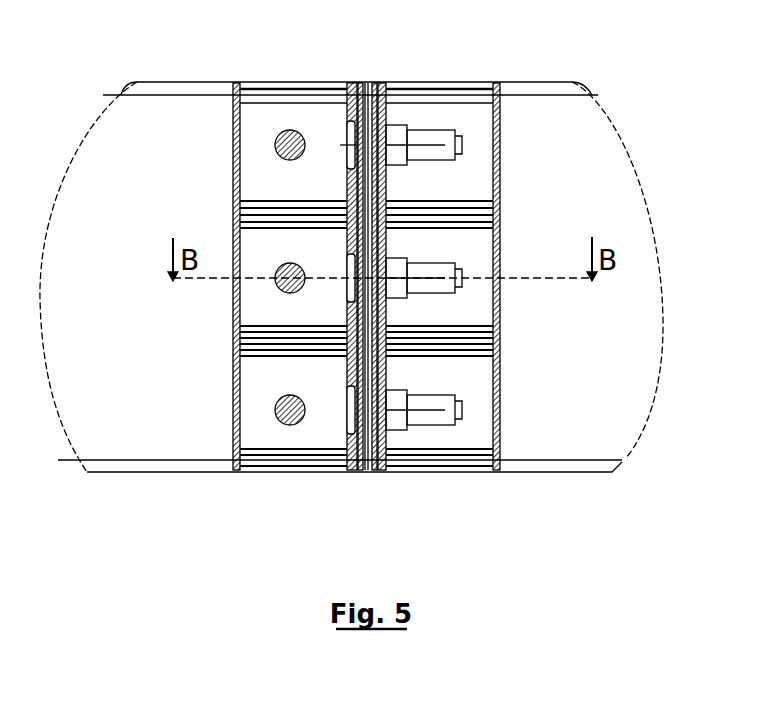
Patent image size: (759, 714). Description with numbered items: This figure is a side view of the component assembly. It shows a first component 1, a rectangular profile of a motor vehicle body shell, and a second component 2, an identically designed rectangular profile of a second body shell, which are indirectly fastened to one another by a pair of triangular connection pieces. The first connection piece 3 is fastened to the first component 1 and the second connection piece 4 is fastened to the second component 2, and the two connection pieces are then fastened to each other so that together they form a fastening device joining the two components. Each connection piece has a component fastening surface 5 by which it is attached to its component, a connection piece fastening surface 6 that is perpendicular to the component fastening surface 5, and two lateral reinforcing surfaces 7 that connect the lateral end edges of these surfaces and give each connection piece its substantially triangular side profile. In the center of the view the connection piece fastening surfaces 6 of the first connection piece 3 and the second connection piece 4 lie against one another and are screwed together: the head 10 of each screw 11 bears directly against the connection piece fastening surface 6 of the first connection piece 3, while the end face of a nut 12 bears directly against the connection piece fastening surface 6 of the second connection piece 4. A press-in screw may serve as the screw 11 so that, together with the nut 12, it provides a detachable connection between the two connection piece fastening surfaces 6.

The first component 1 is at (177, 108).
The second component 2 is at (528, 108).
The first connection piece 3 is at (250, 433).
The second connection piece 4 is at (478, 432).
The component fastening surface 5 is at (465, 312).
The connection piece fastening surface 6 is at (372, 433).
The lateral reinforcing surface 7 is at (270, 457).
The head 10 is at (348, 135).
The screw 11 is at (425, 145).
The nut 12 is at (385, 128).